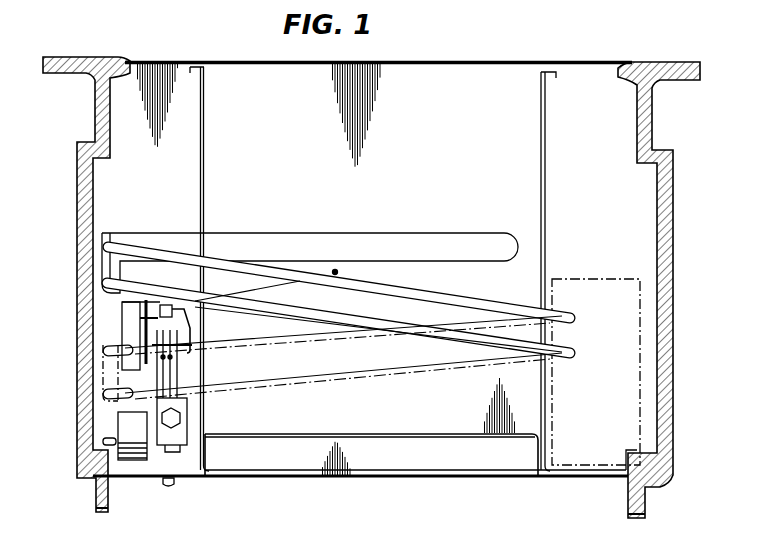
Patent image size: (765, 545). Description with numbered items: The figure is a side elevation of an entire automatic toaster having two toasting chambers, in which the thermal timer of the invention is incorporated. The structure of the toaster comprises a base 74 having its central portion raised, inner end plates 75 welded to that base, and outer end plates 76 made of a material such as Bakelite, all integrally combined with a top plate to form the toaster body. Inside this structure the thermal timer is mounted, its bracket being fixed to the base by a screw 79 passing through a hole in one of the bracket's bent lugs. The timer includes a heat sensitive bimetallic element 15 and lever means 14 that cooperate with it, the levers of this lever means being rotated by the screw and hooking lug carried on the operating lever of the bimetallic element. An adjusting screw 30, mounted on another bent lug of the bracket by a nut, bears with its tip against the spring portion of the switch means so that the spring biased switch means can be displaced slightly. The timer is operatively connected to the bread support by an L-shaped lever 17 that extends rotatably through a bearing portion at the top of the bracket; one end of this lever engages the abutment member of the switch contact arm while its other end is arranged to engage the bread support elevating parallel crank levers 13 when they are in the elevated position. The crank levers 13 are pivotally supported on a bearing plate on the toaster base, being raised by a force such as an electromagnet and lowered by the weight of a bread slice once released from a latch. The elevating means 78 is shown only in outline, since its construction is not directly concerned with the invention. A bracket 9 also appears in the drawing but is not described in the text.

The support bracket 9 is at (440, 246).
The parallel crank levers 13 is at (484, 301).
The lever means 14 is at (178, 374).
The heat sensitive bimetallic element 15 is at (150, 460).
The L-shaped lever 17 is at (290, 284).
The adjusting screw 30 is at (188, 413).
The base 74 is at (191, 477).
The inner end plates 75 is at (205, 143).
The outer end plates 76 is at (80, 236).
The elevating means 78 is at (612, 280).
The screw 79 is at (170, 484).